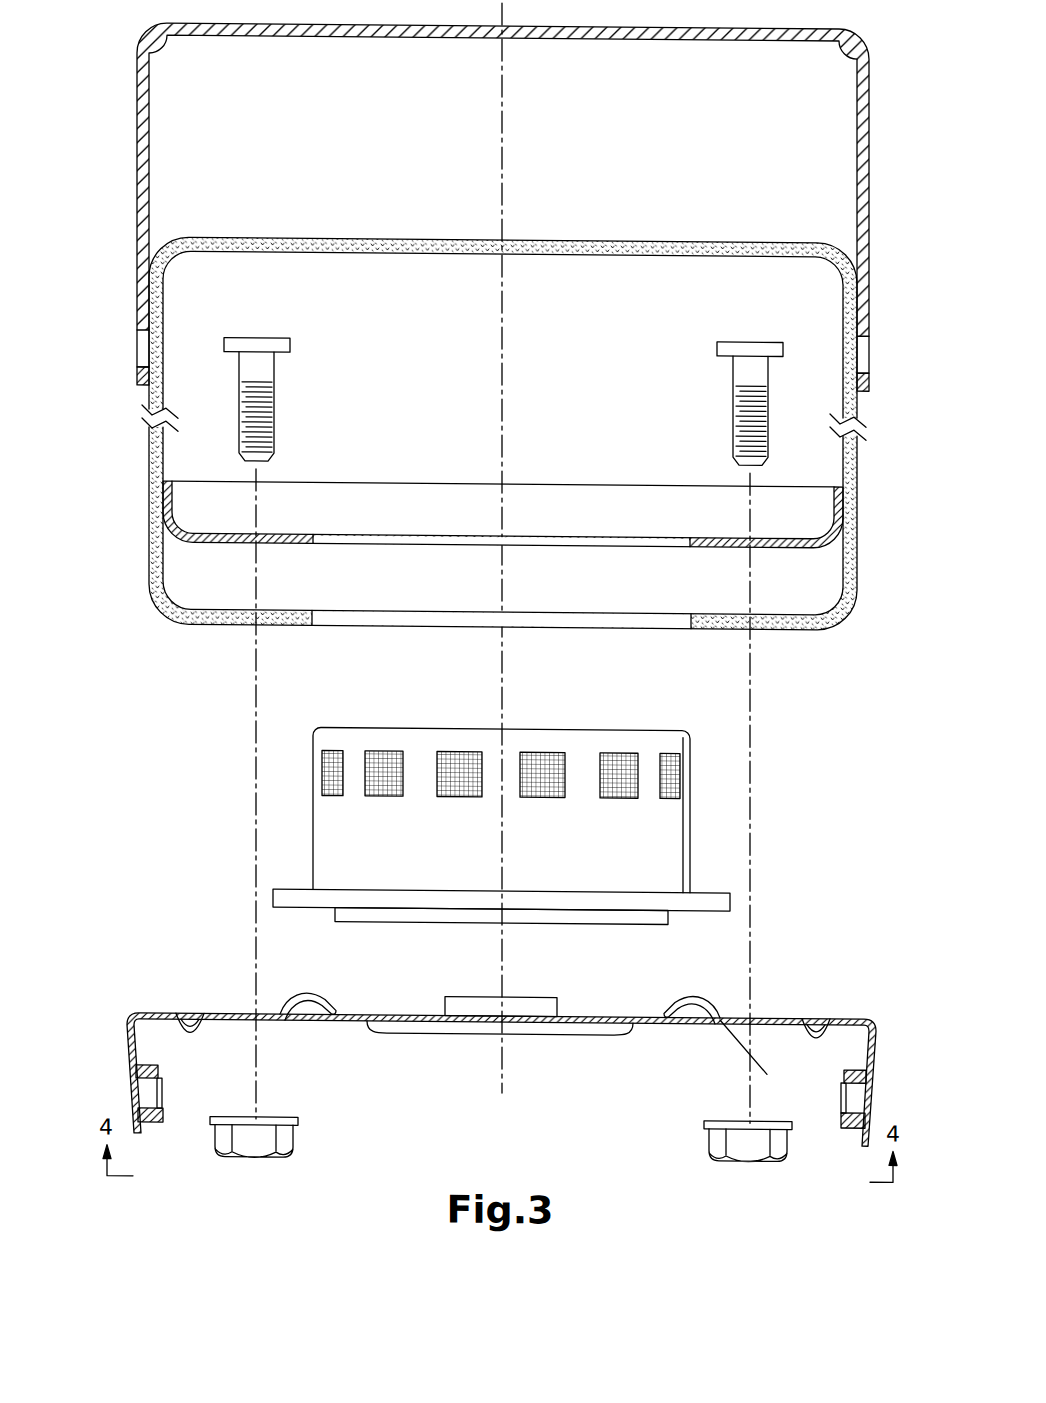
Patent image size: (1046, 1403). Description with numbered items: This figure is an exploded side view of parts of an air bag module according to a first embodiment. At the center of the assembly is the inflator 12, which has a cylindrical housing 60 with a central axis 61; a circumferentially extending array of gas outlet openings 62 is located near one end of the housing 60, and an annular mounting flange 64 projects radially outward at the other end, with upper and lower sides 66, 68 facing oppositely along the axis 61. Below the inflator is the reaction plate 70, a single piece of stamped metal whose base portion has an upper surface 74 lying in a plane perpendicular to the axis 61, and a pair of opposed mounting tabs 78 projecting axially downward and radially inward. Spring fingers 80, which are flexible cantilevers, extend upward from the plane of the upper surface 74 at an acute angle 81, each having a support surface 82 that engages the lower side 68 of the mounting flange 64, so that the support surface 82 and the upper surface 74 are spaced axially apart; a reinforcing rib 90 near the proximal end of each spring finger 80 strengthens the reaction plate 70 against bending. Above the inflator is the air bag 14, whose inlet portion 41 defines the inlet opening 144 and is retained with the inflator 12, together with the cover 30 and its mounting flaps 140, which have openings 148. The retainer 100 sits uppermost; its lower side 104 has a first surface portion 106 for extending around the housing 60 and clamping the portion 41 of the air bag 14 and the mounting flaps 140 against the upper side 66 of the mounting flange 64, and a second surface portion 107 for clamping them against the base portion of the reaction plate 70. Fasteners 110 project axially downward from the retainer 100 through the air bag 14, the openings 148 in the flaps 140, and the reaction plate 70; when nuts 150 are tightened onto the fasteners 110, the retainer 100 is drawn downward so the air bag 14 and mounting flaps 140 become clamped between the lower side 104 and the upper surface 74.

The inflator 12 is at (534, 815).
The air bag 14 is at (330, 238).
The cover 30 is at (565, 24).
The portion of the air bag 41 is at (226, 623).
The housing 60 is at (622, 834).
The central axis 61 is at (503, 143).
The gas outlet openings 62 is at (615, 748).
The mounting flange 64 is at (430, 886).
The upper side of the mounting flange 66 is at (722, 884).
The lower side of the mounting flange 68 is at (705, 920).
The reaction plate 70 is at (505, 1041).
The upper surface of the base portion 74 is at (170, 1012).
The mounting tabs 78 is at (128, 1052).
The spring fingers 80 is at (790, 1012).
The acute angle 81 is at (771, 1038).
The support surface 82 is at (688, 995).
The reinforcing rib 90 is at (590, 1032).
The retainer 100 is at (588, 476).
The lower side of the frame 104 is at (217, 554).
The first surface portion 106 is at (742, 556).
The second surface portion 107 is at (823, 560).
The fasteners 110 is at (272, 336).
The mounting flaps 140 is at (137, 313).
The inlet opening 144 is at (451, 456).
The openings 148 is at (140, 345).
The nuts 150 is at (250, 1157).